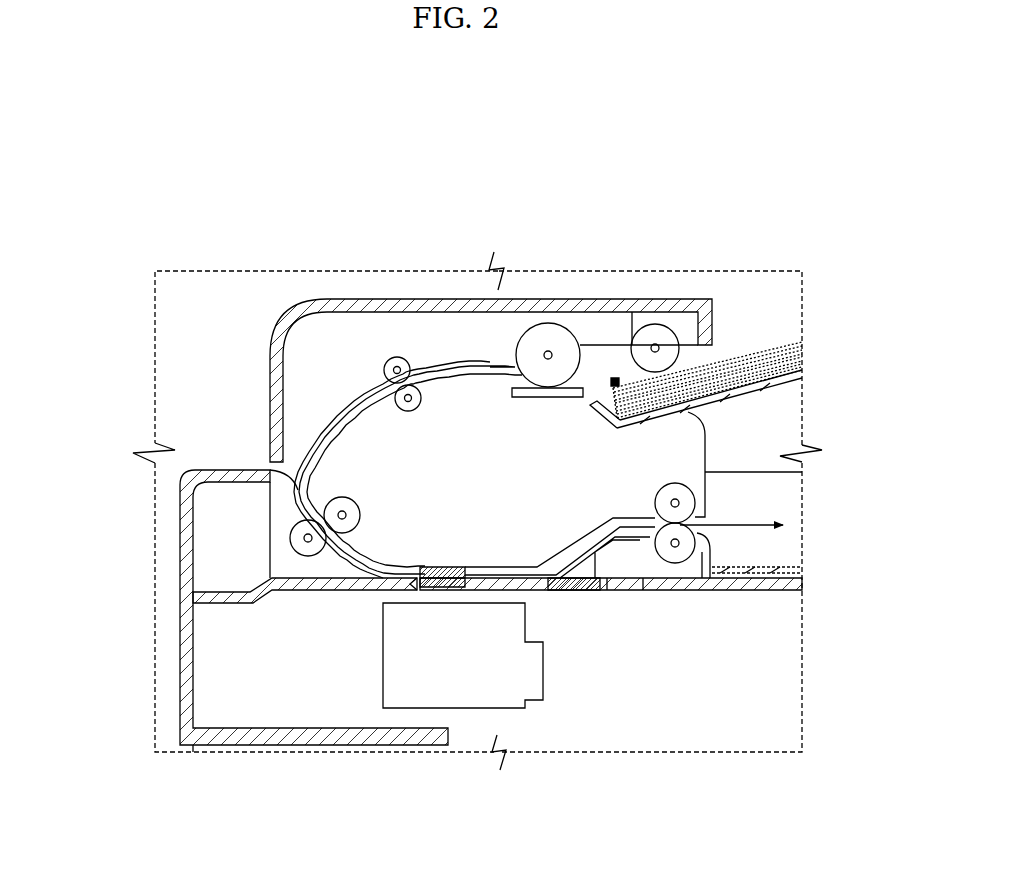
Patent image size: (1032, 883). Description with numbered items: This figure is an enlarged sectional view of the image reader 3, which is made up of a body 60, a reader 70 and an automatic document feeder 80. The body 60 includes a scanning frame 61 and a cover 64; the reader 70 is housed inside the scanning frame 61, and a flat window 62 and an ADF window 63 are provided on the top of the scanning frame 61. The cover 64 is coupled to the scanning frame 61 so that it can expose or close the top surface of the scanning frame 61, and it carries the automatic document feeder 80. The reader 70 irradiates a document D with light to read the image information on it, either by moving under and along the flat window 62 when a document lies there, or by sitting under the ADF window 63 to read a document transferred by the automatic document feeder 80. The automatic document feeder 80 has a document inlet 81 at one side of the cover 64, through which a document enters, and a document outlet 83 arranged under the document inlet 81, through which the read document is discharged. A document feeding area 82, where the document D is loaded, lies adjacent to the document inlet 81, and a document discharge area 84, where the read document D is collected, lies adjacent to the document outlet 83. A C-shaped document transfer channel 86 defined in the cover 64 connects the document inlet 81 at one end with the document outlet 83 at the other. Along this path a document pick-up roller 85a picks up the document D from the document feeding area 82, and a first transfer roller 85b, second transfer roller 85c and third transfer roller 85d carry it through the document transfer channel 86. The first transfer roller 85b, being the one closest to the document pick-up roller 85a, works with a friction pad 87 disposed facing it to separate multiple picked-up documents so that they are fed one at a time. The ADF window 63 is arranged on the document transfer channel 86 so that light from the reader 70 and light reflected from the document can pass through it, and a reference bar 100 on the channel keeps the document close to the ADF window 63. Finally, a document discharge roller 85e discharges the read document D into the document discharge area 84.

The image reader 3 is at (720, 148).
The body 60 is at (106, 430).
The scanning frame 61 is at (178, 660).
The flat window 62 is at (800, 587).
The ADF window 63 is at (414, 592).
The cover 64 is at (212, 452).
The reader 70 is at (383, 663).
The automatic document feeder 80 is at (740, 258).
The document inlet 81 is at (700, 356).
The document feeding area 82 is at (760, 388).
The document outlet 83 is at (716, 511).
The document discharge area 84 is at (790, 563).
The document pick-up roller 85a is at (655, 324).
The first transfer roller 85b is at (548, 323).
The second transfer roller 85c is at (397, 357).
The third transfer roller 85d is at (338, 497).
The document discharge roller 85e is at (675, 483).
The document transfer channel 86 is at (337, 418).
The friction pad 87 is at (611, 386).
The reference bar 100 is at (445, 567).
The document D is at (782, 352).